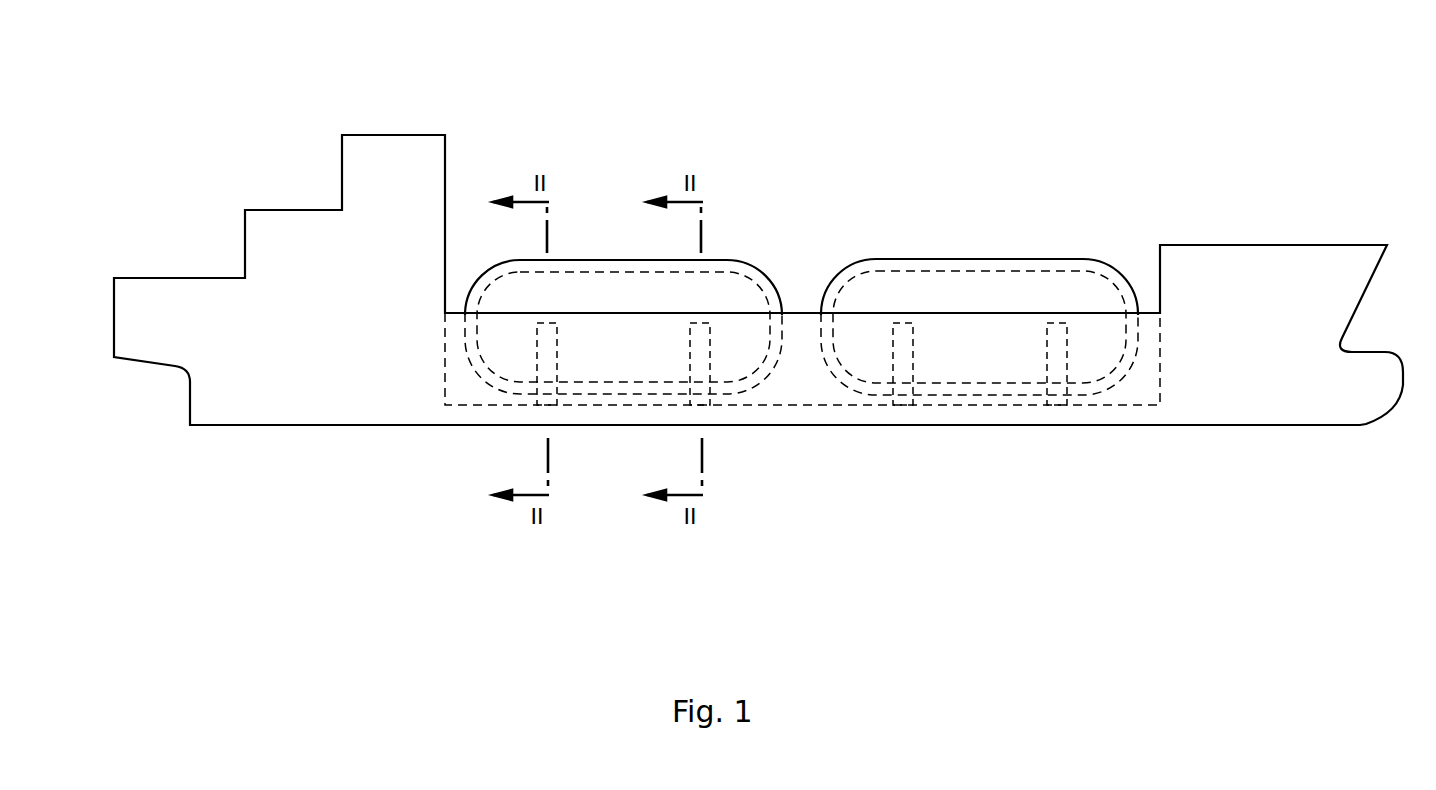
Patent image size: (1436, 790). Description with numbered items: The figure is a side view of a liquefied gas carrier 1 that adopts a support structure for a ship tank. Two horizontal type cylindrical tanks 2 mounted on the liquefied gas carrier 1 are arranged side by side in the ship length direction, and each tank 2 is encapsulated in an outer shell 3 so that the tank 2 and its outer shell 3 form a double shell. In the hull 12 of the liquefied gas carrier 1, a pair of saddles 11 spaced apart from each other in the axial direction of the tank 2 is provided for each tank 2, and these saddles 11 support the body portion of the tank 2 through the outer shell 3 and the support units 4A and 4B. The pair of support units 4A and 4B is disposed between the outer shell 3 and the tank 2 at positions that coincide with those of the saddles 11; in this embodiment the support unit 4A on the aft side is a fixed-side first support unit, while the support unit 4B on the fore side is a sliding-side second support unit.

The liquefied gas carrier 1 is at (1163, 153).
The tank 2 is at (575, 270).
The outer shell 3 is at (615, 260).
The saddle 11 is at (558, 340).
The first support unit 4A is at (804, 458).
The second support unit 4B is at (957, 458).
The hull 12 is at (347, 400).